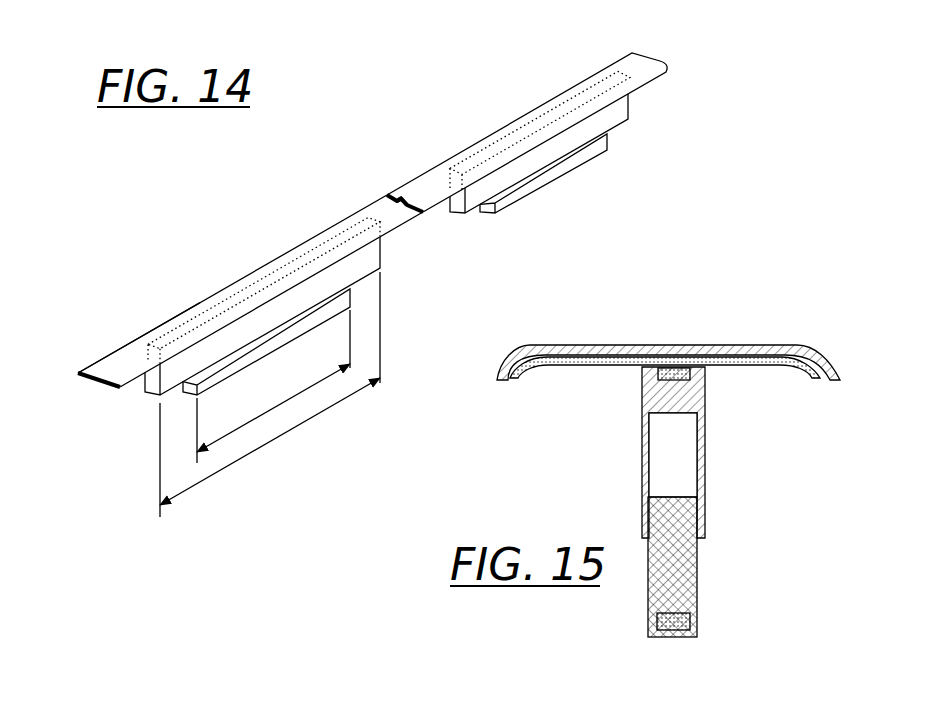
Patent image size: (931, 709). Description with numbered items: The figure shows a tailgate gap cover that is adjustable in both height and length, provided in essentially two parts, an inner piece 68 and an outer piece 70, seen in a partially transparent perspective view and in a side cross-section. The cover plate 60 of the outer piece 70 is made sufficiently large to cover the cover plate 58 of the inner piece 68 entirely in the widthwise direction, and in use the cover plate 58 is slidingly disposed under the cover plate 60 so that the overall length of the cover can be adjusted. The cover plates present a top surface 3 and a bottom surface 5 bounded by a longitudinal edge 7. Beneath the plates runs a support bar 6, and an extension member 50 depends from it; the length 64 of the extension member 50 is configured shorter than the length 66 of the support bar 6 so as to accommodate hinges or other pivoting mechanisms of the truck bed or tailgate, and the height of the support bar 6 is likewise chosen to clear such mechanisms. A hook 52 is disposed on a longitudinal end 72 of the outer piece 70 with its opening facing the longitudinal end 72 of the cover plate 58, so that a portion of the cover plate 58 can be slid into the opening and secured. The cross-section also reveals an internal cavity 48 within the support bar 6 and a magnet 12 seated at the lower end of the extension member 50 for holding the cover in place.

In FIG. 14, the top surface of cover plate 3 is at (110, 357).
In FIG. 14, the bottom surface of cover plate 5 is at (119, 388).
In FIG. 14, the support bar 6 is at (267, 320).
In FIG. 15, the support bar 6 is at (705, 468).
In FIG. 14, the longitudinal edge 7 is at (227, 291).
In FIG. 15, the magnet 12 is at (692, 618).
In FIG. 15, the cavity 48 is at (682, 433).
In FIG. 14, the extension member 50 is at (232, 358).
In FIG. 15, the extension member 50 is at (698, 562).
In FIG. 14, the hook 52 is at (432, 179).
In FIG. 15, the hook 52 is at (703, 373).
In FIG. 14, the cover plate of inner piece 58 is at (140, 343).
In FIG. 15, the cover plate of inner piece 58 is at (748, 356).
In FIG. 14, the cover plate of outer piece 60 is at (553, 103).
In FIG. 15, the cover plate of outer piece 60 is at (618, 347).
In FIG. 14, the length of extension member 64 is at (263, 427).
In FIG. 14, the length of support bar 66 is at (257, 477).
In FIG. 14, the inner piece 68 is at (223, 242).
In FIG. 14, the outer piece 70 is at (514, 86).
In FIG. 14, the longitudinal end 72 is at (386, 192).